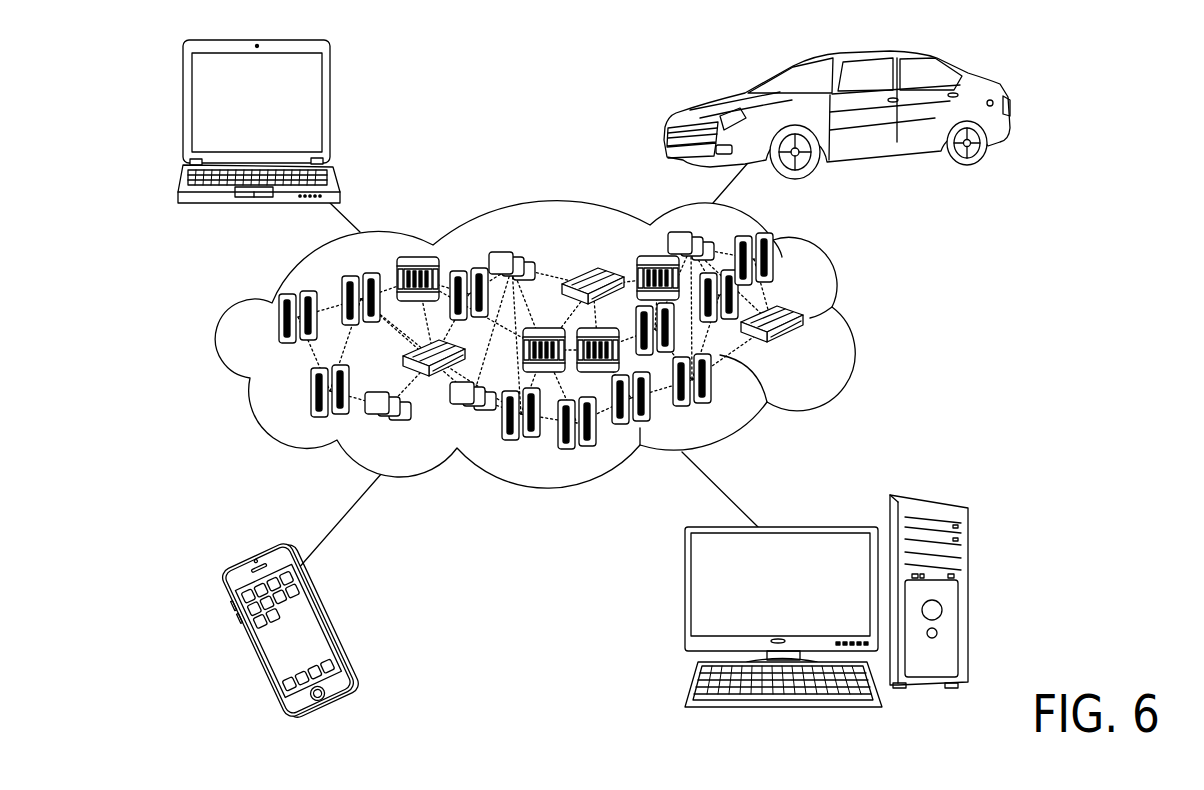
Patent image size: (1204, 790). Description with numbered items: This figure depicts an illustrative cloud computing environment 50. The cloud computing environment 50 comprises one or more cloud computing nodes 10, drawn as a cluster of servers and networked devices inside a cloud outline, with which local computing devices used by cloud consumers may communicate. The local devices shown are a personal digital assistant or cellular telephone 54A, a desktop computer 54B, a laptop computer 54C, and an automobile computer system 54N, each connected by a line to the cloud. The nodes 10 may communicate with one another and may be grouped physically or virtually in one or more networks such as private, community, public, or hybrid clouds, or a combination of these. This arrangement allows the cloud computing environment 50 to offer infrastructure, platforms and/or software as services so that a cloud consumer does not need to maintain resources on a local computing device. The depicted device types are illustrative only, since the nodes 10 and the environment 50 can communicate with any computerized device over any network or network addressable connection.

The cloud computing node 10 is at (806, 339).
The cloud computing environment 50 is at (849, 324).
The personal digital assistant or cellular telephone 54A is at (310, 623).
The desktop computer 54B is at (868, 502).
The laptop computer 54C is at (311, 120).
The automobile computer system 54N is at (668, 125).